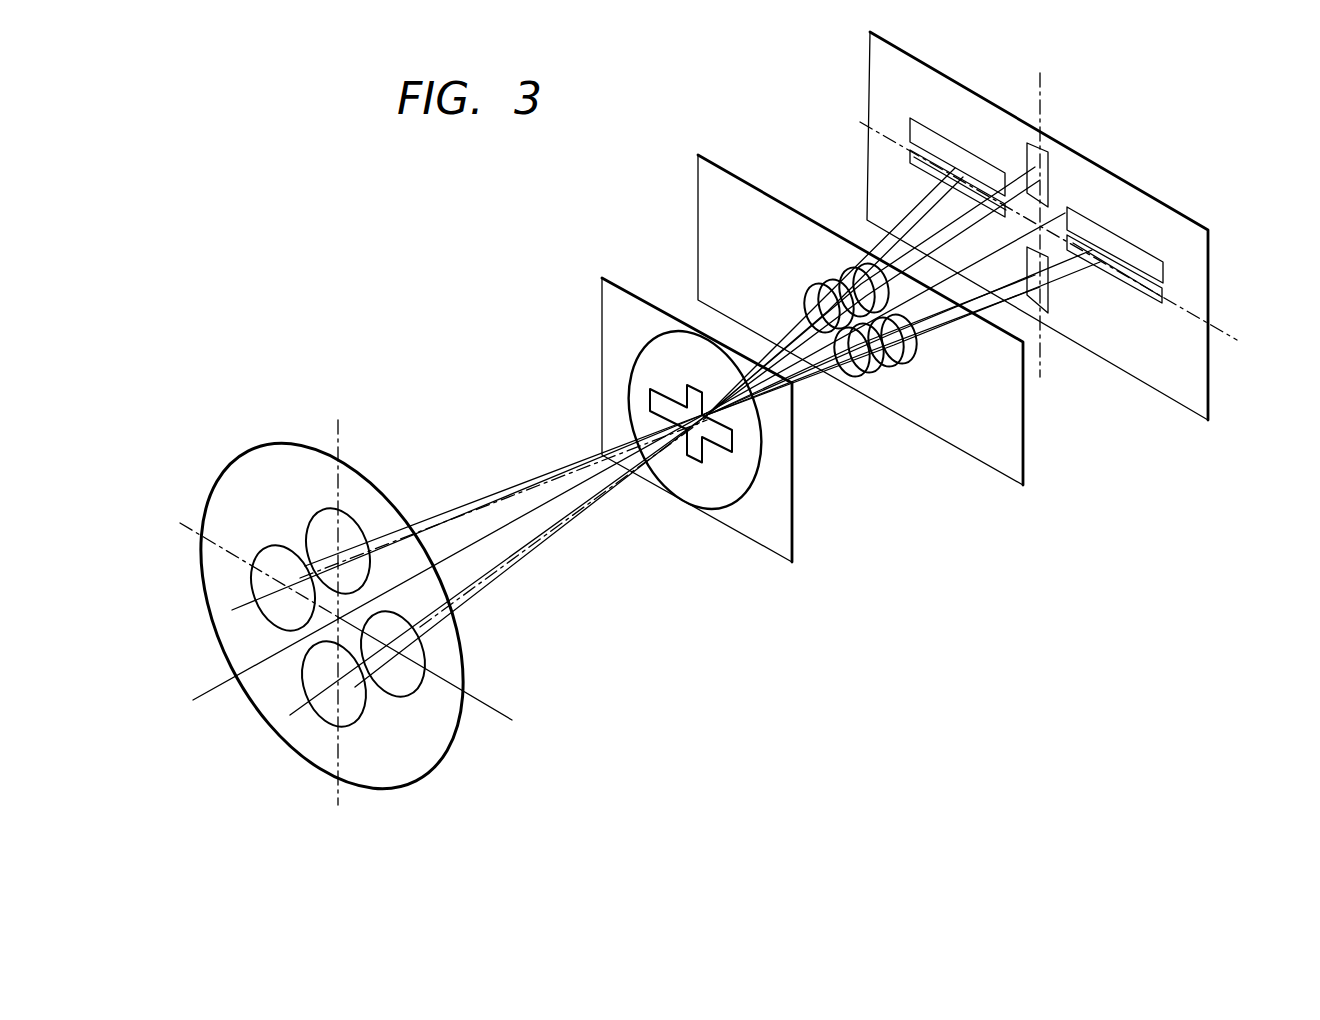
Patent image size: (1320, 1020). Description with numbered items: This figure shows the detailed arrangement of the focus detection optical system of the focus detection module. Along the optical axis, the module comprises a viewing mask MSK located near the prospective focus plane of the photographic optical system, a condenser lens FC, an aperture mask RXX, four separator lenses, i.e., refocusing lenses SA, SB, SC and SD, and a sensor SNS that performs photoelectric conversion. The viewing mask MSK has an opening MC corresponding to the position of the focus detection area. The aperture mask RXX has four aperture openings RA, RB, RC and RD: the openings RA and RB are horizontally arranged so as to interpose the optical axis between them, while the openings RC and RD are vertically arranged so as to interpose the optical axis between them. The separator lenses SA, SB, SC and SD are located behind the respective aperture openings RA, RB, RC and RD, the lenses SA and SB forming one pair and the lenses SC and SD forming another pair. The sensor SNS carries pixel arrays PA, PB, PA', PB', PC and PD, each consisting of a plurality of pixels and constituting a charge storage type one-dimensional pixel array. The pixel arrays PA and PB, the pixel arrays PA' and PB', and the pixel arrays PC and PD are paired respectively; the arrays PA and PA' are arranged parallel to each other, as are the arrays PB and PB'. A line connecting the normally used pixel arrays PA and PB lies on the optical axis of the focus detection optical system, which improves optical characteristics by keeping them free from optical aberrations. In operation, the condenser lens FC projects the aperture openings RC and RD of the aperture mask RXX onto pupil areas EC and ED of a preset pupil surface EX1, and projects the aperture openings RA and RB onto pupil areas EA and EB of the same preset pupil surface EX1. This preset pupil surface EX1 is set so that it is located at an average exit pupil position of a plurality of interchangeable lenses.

The preset pupil surface EX1 is at (440, 730).
The pupil area EA is at (422, 652).
The pupil area EB is at (268, 556).
The pupil area EC is at (350, 522).
The pupil area ED is at (360, 730).
The viewing mask MSK is at (765, 548).
The condenser lens FC is at (752, 483).
The opening MC is at (693, 455).
The aperture mask RXX is at (996, 470).
The aperture opening RA is at (806, 307).
The aperture opening RB is at (902, 365).
The aperture opening RC is at (855, 378).
The aperture opening RD is at (850, 272).
The separator lens SA is at (826, 286).
The separator lens SB is at (916, 344).
The separator lens SC is at (876, 374).
The separator lens SD is at (868, 268).
The sensor SNS is at (1198, 400).
The pixel array PA is at (900, 168).
The pixel array PA' is at (957, 105).
The pixel array PB is at (1114, 339).
The pixel array PB' is at (1132, 218).
The pixel array PC is at (1050, 297).
The pixel array PD is at (1040, 183).